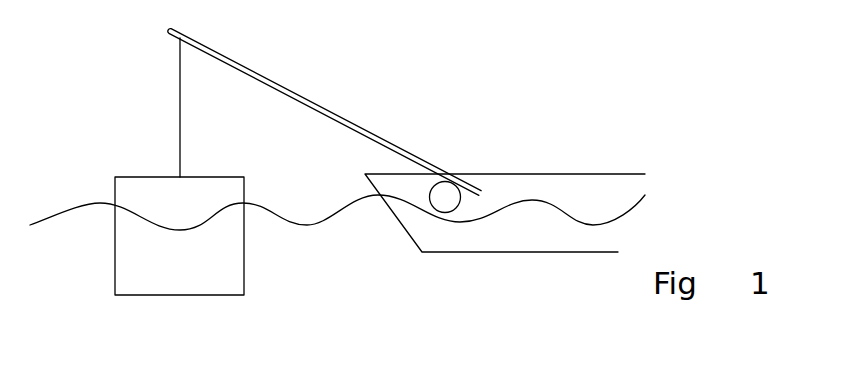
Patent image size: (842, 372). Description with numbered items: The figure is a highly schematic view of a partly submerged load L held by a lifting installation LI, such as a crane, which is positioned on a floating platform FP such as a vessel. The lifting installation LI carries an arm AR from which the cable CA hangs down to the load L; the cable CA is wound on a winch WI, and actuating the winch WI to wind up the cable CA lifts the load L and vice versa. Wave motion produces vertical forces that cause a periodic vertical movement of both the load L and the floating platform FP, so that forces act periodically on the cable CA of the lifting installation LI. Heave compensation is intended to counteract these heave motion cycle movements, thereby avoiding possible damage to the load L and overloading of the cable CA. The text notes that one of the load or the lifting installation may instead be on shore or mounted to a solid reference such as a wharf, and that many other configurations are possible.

The lifting installation LI is at (368, 63).
The arm AR is at (208, 42).
The cable CA is at (178, 100).
The winch WI is at (447, 190).
The floating platform FP is at (610, 168).
The load L is at (229, 297).